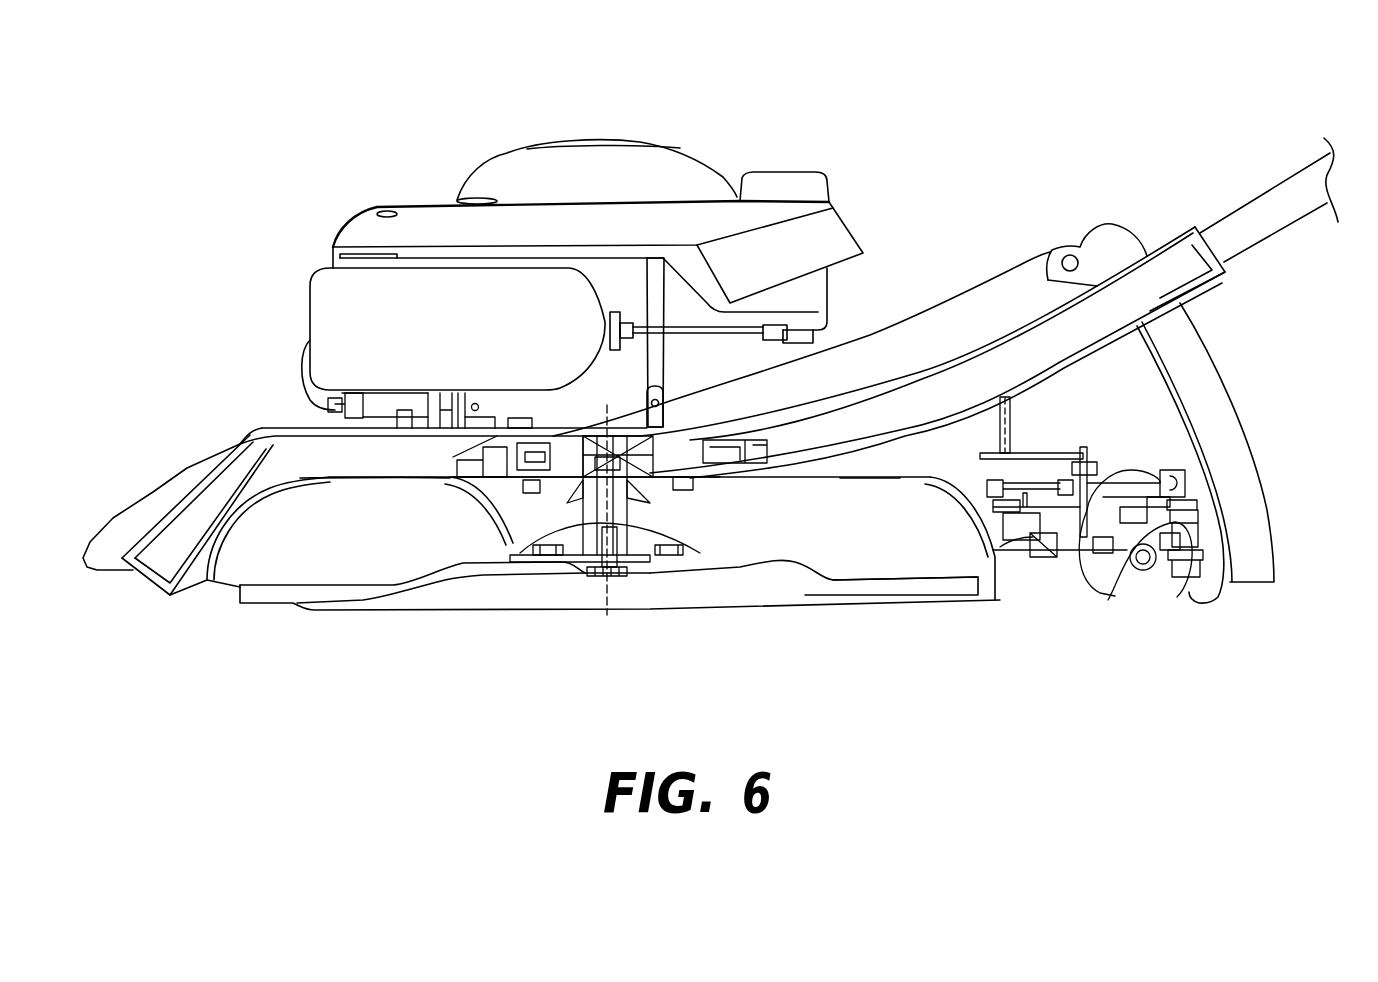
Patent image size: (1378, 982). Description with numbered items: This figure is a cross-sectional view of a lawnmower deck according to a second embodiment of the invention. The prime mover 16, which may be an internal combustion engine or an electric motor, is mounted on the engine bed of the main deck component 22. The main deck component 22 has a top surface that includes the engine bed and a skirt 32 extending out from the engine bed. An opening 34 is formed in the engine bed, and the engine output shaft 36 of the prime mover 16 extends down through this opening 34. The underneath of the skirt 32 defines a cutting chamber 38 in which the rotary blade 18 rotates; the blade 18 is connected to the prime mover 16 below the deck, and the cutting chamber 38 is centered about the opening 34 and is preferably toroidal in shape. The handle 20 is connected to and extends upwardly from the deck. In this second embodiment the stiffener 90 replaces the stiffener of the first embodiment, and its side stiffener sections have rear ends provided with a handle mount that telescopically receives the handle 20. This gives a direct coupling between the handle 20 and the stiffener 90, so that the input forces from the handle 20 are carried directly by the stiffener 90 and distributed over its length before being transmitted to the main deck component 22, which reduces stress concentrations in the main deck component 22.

The prime mover 16 is at (677, 153).
The rotary blade 18 is at (905, 588).
The handle 20 is at (1282, 193).
The main deck component 22 is at (1003, 272).
The skirt 32 is at (980, 490).
The opening 34 is at (503, 515).
The engine output shaft 36 is at (605, 517).
The cutting chamber 38 is at (856, 545).
The stiffener 90 is at (931, 362).